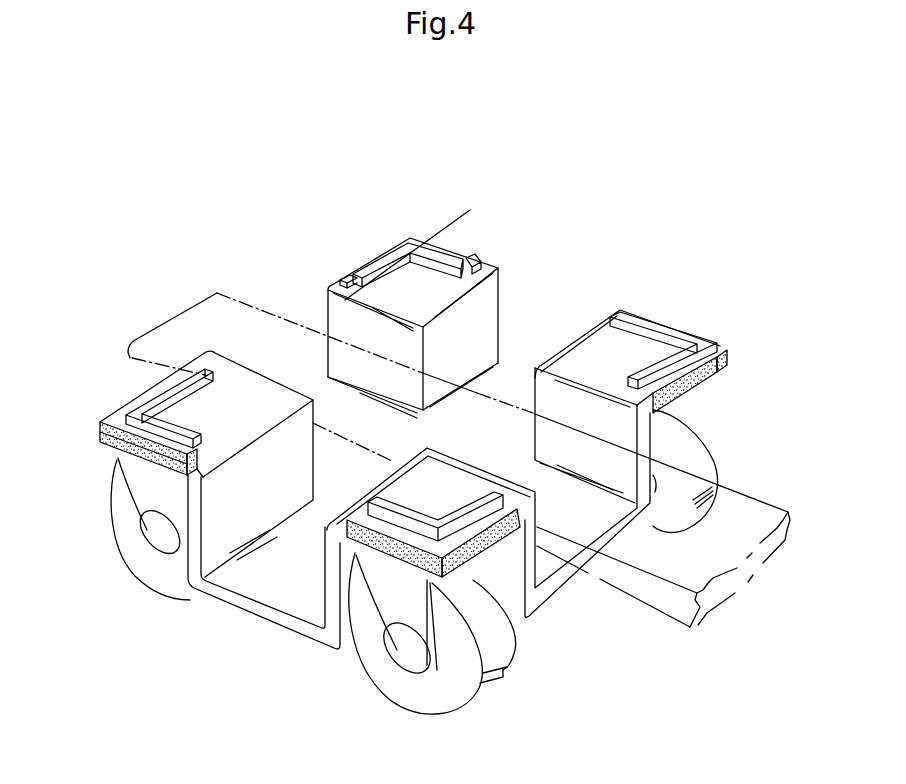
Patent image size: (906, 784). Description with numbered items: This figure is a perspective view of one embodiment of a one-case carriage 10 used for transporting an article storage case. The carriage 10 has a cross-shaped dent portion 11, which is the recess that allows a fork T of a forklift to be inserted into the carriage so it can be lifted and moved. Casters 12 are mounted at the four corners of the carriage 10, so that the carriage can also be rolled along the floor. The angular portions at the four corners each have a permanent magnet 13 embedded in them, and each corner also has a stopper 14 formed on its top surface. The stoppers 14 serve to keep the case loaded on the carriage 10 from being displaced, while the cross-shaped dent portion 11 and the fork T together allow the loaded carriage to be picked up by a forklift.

The one-case carriage 10 is at (322, 280).
The cross-shaped dent portion 11 is at (485, 378).
The casters 12 is at (693, 435).
The permanent magnets 13 is at (387, 242).
The stoppers 14 is at (420, 243).
The fork T is at (253, 303).